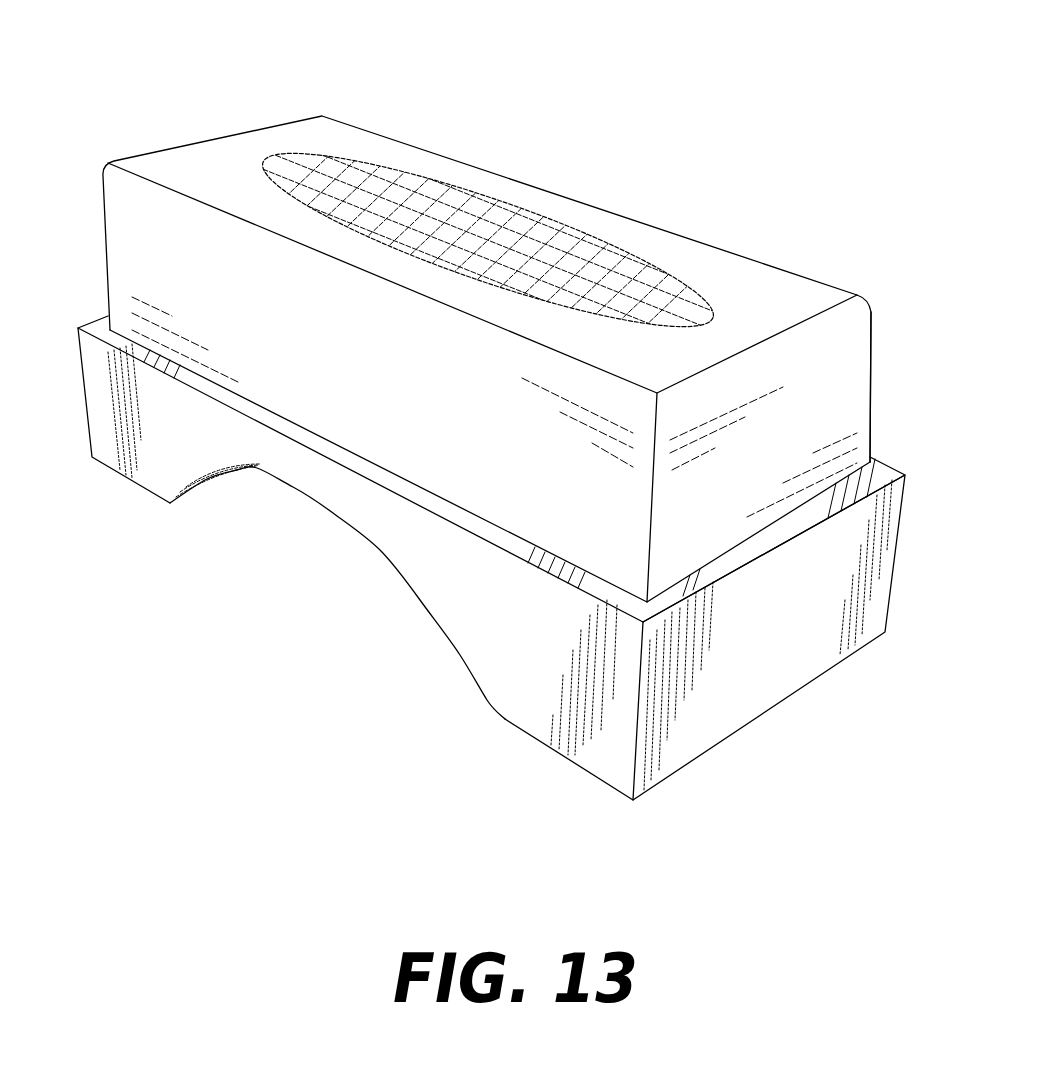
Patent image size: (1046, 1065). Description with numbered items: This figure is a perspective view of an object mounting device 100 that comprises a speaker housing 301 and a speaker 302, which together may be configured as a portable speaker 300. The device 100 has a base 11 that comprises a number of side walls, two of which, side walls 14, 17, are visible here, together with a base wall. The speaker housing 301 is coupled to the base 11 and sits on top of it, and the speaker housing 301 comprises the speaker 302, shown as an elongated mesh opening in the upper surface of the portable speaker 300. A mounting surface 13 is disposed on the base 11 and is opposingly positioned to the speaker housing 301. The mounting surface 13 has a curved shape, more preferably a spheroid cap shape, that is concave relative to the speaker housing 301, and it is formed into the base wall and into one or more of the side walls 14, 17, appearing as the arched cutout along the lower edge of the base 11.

The object mounting device 100 is at (513, 86).
The portable speaker 300 is at (138, 135).
The speaker housing 301 is at (875, 308).
The speaker 302 is at (537, 262).
The base 11 is at (907, 473).
The mounting surface 13 is at (213, 492).
The side wall 14 is at (488, 585).
The side wall 17 is at (737, 637).